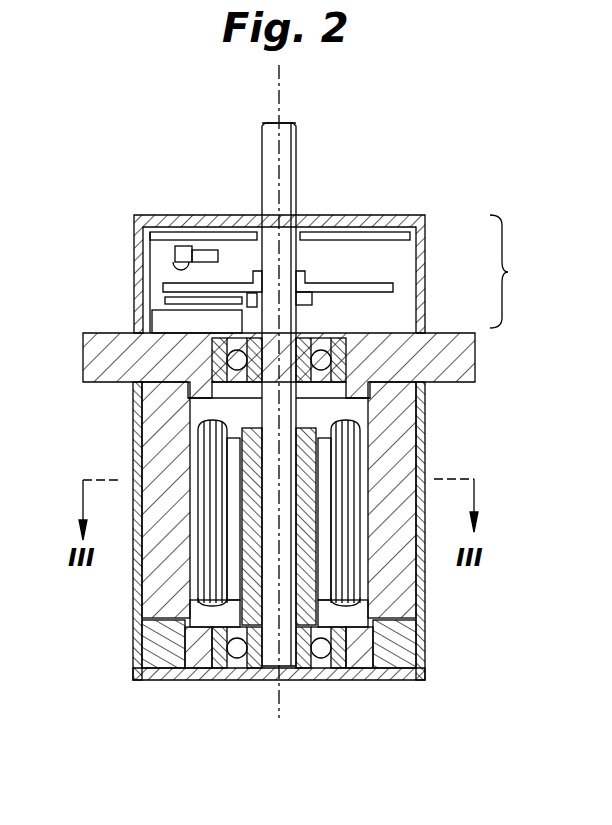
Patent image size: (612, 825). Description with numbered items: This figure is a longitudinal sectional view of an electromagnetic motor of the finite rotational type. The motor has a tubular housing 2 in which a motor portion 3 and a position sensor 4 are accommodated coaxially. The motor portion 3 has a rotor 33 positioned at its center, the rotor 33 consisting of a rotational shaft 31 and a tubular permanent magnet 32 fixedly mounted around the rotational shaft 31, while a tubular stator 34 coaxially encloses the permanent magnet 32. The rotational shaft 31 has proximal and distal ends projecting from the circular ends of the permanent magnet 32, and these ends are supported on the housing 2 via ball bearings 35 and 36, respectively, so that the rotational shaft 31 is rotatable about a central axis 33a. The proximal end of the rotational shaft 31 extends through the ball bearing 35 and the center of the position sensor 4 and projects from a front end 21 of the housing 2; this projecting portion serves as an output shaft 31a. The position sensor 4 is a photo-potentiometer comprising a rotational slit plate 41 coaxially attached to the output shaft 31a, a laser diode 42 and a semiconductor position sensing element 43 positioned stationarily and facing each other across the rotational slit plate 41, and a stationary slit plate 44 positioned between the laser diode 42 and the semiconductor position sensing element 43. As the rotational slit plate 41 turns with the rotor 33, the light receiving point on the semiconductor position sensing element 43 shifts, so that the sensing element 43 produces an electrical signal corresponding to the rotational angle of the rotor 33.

The tubular housing 2 is at (424, 668).
The motor portion 3 is at (506, 380).
The position sensor 4 is at (512, 271).
The front end 21 is at (390, 215).
The rotational shaft 31 is at (267, 472).
The output shaft 31a is at (297, 163).
The tubular permanent magnet 32 is at (235, 427).
The rotor 33 is at (163, 504).
The central axis 33a is at (281, 93).
The tubular stator 34 is at (372, 455).
The ball bearing 35 is at (320, 365).
The ball bearing 36 is at (226, 681).
The rotational slit plate 41 is at (163, 290).
The laser diode 42 is at (173, 250).
The semiconductor position sensing element 43 is at (150, 320).
The stationary slit plate 44 is at (163, 300).